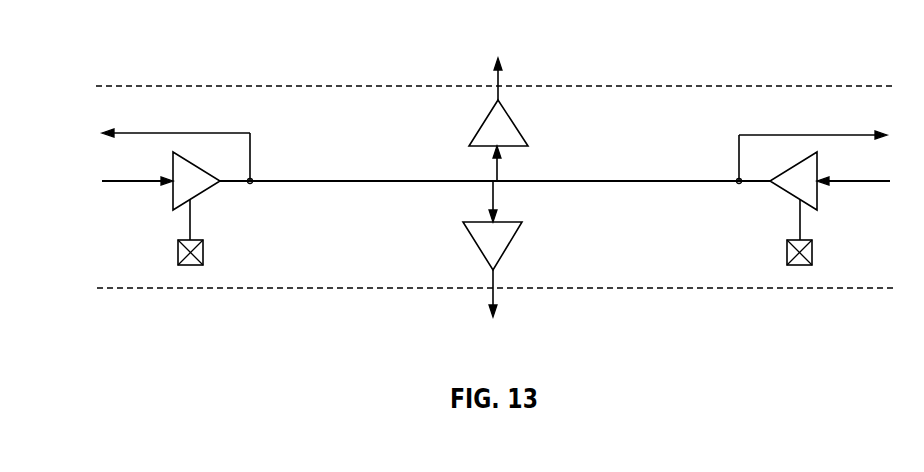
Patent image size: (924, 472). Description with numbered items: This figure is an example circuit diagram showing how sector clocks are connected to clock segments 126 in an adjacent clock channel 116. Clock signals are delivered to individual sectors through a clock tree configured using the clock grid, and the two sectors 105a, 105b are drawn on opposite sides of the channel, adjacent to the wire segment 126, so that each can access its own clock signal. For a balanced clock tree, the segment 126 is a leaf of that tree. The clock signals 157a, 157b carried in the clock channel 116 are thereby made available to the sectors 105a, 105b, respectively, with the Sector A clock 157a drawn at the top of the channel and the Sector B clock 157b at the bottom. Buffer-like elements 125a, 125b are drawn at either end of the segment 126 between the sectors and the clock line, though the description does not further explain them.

The sector 105a is at (132, 45).
The sector 105b is at (130, 337).
The clock signal 157a is at (322, 45).
The clock signal 157b is at (332, 337).
The clock channel 116 is at (628, 85).
The clock segment 126 is at (595, 277).
The clock buffer (Sector A side) 125a is at (200, 196).
The clock buffer (Sector B side) 125b is at (790, 196).